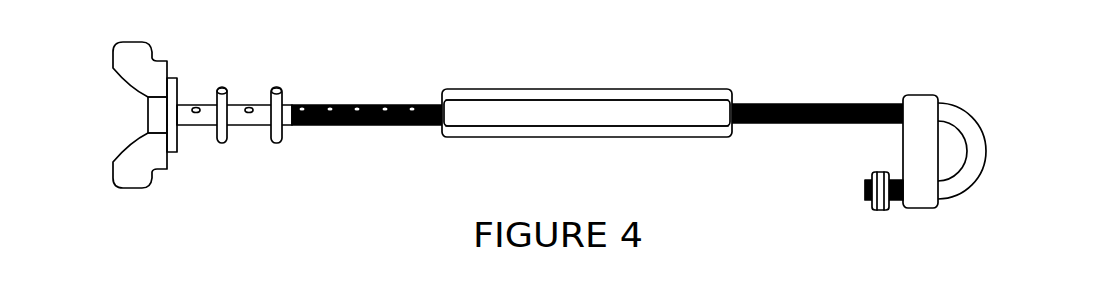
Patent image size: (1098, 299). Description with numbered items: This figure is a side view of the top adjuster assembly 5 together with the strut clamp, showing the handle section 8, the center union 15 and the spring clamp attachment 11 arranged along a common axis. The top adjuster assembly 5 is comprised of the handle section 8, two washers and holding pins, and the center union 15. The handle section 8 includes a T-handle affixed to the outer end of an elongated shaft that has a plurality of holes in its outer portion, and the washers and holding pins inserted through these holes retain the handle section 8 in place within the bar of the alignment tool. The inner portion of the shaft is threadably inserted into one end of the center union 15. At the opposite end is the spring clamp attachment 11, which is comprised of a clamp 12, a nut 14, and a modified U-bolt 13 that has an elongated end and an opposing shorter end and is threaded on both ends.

The top adjuster assembly 5 is at (377, 83).
The handle section 8 is at (115, 177).
The spring clamp attachment 11 is at (928, 156).
The clamp 12 is at (913, 95).
The modified U-bolt 13 is at (968, 187).
The nut 14 is at (873, 208).
The center union 15 is at (584, 89).